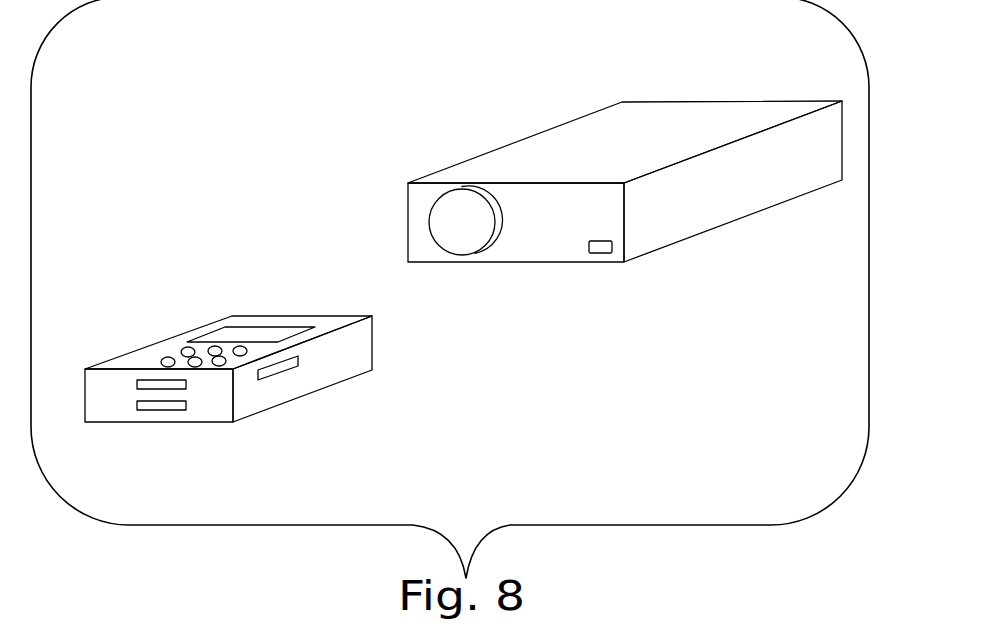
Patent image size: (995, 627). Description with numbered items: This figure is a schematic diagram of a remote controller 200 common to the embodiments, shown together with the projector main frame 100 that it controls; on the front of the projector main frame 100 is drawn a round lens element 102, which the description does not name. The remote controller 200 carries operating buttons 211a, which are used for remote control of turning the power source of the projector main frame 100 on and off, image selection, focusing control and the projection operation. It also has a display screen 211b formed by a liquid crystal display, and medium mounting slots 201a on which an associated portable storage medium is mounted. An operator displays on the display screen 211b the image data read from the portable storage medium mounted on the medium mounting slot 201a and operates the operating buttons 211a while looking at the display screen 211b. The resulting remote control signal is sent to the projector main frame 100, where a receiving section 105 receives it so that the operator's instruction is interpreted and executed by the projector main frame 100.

The projector main frame 100 is at (680, 102).
The projection lens 102 is at (442, 197).
The receiving section 105 is at (600, 253).
The remote controller 200 is at (118, 358).
The operating buttons 211a is at (176, 337).
The display screen 211b is at (268, 327).
The medium mounting slots 201a is at (186, 385).